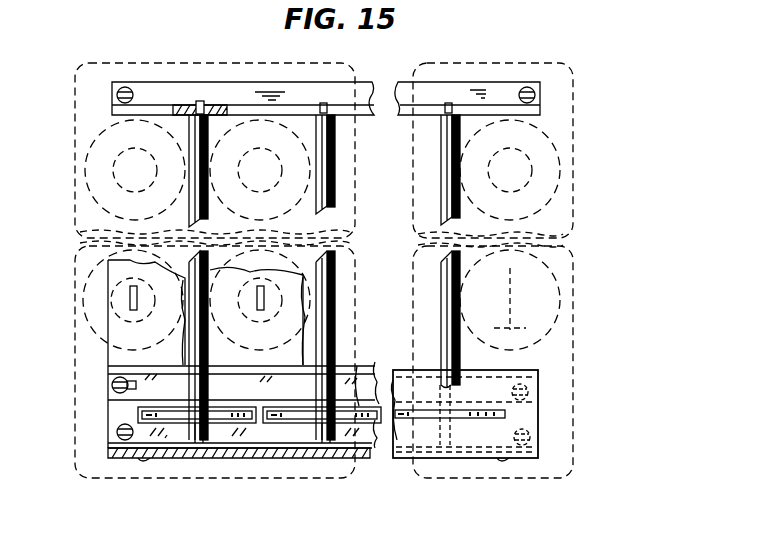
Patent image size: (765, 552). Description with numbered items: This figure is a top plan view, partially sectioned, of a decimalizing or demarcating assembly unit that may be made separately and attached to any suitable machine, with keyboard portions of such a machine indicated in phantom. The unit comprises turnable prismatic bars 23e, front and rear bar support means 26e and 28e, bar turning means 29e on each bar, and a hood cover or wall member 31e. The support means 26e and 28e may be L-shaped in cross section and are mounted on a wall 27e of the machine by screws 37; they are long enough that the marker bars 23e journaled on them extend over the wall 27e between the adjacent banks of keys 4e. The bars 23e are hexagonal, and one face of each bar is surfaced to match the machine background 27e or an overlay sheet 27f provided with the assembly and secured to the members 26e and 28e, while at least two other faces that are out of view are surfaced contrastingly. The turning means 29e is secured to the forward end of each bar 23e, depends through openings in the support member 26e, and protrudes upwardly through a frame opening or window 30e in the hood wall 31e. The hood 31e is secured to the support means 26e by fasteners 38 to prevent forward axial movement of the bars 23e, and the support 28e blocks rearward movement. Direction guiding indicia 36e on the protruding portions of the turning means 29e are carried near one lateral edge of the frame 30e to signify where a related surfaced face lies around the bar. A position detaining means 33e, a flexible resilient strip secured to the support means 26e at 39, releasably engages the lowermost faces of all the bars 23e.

The banks of keys 4e is at (532, 342).
The turnable prismatic bars 23e is at (417, 236).
The front bar support means 26e is at (388, 452).
The wall of the machine 27e is at (417, 275).
The overlay sheet 27f is at (116, 356).
The rear bar support means 28e is at (375, 80).
The bar turning means 29e is at (470, 412).
The frame opening or window 30e is at (468, 437).
The hood cover or wall member 31e is at (526, 419).
The position detaining means 33e is at (304, 399).
The direction guiding indicia 36e is at (418, 437).
The screws 37 is at (117, 96).
The fasteners 38 is at (150, 458).
The securing point of detaining strip 39 is at (112, 386).